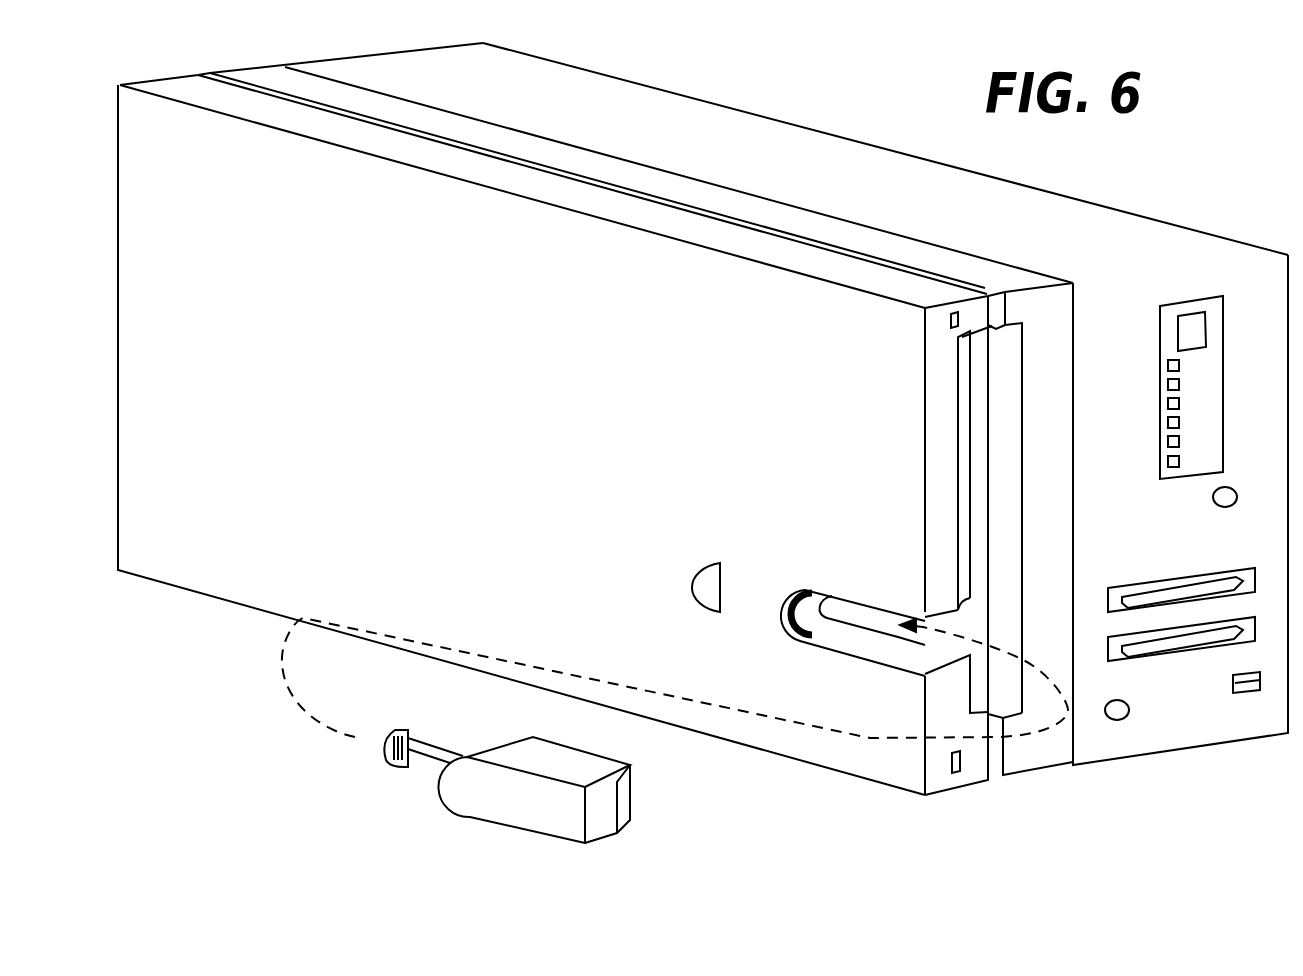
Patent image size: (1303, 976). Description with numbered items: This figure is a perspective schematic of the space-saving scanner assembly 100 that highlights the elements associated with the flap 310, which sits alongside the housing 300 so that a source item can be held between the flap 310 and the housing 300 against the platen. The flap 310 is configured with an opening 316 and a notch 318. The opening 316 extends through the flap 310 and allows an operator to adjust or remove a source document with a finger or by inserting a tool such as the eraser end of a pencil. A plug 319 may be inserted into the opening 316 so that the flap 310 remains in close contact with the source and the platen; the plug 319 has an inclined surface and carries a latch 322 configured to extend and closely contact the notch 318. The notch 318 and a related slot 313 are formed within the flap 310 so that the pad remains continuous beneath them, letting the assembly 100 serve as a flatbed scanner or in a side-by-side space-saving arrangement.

The space-saving scanner assembly 100 is at (766, 85).
The housing 300 is at (1107, 243).
The flap 310 is at (558, 192).
The slot 313 is at (805, 594).
The opening 316 is at (920, 657).
The notch 318 is at (696, 589).
The plug 319 is at (517, 805).
The latch 322 is at (385, 753).